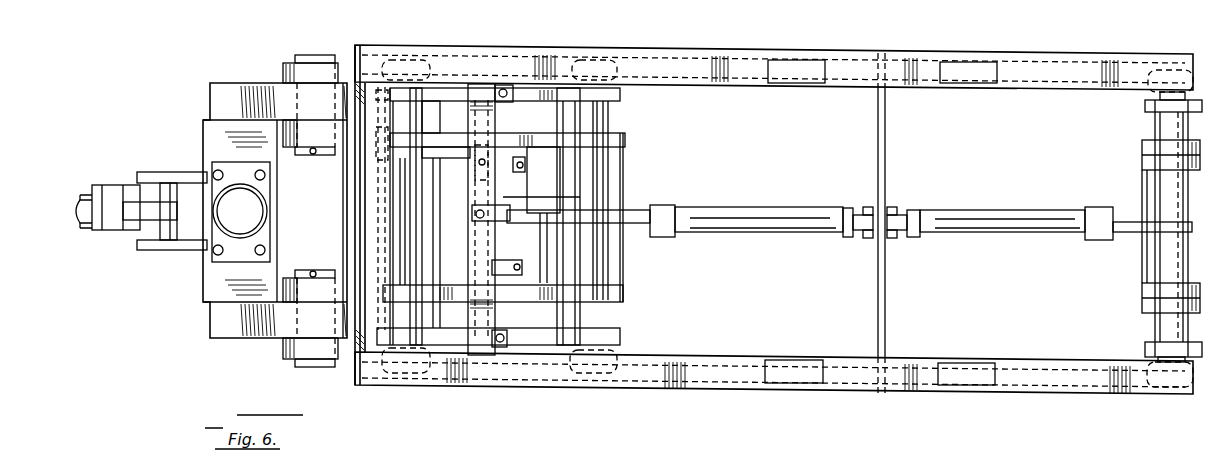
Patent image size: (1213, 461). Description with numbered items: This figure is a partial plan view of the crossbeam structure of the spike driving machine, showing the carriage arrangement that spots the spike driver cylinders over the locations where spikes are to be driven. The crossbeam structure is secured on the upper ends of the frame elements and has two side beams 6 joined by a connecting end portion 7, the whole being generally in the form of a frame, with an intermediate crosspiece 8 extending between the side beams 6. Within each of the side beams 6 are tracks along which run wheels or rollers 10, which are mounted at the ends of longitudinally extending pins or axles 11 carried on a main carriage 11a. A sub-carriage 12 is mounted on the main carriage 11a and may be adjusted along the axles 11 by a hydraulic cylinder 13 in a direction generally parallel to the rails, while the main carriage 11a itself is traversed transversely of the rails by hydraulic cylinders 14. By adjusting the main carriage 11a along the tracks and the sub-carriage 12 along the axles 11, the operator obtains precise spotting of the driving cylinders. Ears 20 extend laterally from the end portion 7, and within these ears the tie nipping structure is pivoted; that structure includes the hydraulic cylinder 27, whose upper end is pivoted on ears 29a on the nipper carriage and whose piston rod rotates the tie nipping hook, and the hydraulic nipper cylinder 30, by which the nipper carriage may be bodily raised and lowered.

The side beams 6 is at (743, 80).
The connecting end portion 7 is at (575, 34).
The intermediate crosspiece 8 is at (887, 312).
The wheels or rollers 10 is at (397, 50).
The longitudinally extending pins or axles 11 is at (415, 192).
The main carriage 11a is at (669, 329).
The sub-carriage 12 is at (640, 285).
The hydraulic cylinder 13 is at (505, 185).
The hydraulic cylinders 14 is at (755, 210).
The ears 20 is at (283, 70).
The hydraulic cylinder 27 is at (124, 194).
The ears 29a is at (163, 173).
The hydraulic nipper cylinder 30 is at (257, 203).